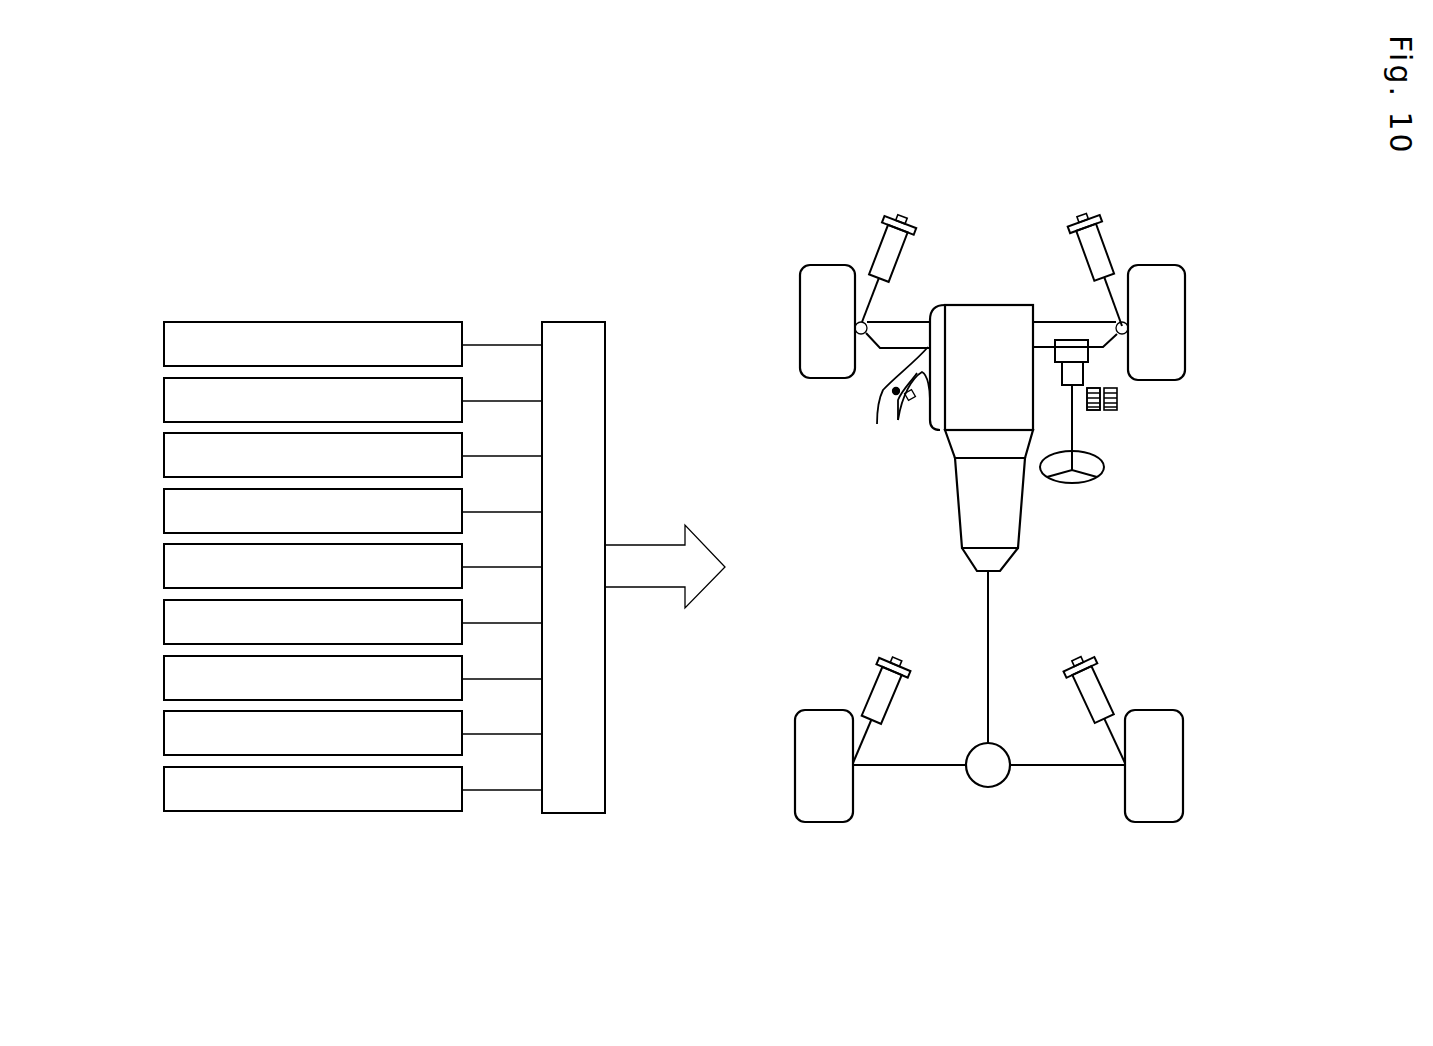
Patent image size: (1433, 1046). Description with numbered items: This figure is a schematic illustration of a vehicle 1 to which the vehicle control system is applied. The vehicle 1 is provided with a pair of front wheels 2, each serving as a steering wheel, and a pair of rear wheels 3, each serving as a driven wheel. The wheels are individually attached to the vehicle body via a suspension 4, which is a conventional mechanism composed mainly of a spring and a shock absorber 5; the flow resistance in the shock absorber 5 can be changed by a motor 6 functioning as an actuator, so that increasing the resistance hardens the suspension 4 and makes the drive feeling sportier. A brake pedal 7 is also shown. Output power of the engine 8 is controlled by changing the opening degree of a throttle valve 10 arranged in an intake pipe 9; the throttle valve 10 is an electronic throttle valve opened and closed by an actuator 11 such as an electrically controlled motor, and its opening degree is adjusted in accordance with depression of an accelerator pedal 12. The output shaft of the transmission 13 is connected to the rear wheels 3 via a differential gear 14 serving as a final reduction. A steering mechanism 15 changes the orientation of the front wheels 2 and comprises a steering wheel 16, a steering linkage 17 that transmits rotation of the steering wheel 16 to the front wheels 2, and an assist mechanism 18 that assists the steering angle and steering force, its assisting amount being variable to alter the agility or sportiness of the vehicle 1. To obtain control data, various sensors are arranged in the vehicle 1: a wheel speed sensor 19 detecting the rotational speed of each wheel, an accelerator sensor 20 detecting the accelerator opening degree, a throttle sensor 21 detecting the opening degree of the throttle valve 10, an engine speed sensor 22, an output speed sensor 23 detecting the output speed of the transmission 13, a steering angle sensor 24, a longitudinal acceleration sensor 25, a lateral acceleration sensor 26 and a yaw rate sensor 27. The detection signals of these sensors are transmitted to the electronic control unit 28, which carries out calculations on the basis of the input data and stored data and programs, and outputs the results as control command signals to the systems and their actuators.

The vehicle 1 is at (815, 232).
The front wheel 2 is at (813, 297).
The rear wheel 3 is at (828, 822).
The suspension 4 is at (885, 198).
The shock absorber 5 is at (898, 255).
The motor 6 is at (900, 218).
The brake pedal 7 is at (1118, 400).
The engine 8 is at (996, 382).
The intake pipe 9 is at (895, 391).
The throttle valve 10 is at (887, 402).
The actuator 11 is at (913, 403).
The accelerator pedal 12 is at (1097, 410).
The transmission 13 is at (1025, 517).
The differential gear 14 is at (993, 790).
The steering mechanism 15 is at (1055, 317).
The steering wheel 16 is at (1083, 483).
The steering linkage 17 is at (1110, 343).
The assist mechanism 18 is at (1075, 343).
The wheel speed sensor 19 is at (164, 346).
The accelerator sensor 20 is at (164, 402).
The throttle sensor 21 is at (164, 457).
The engine speed sensor 22 is at (164, 513).
The output speed sensor 23 is at (164, 568).
The steering angle sensor 24 is at (164, 624).
The longitudinal acceleration sensor 25 is at (164, 680).
The lateral acceleration sensor 26 is at (164, 735).
The yaw rate sensor 27 is at (164, 791).
The electronic control unit 28 is at (575, 322).